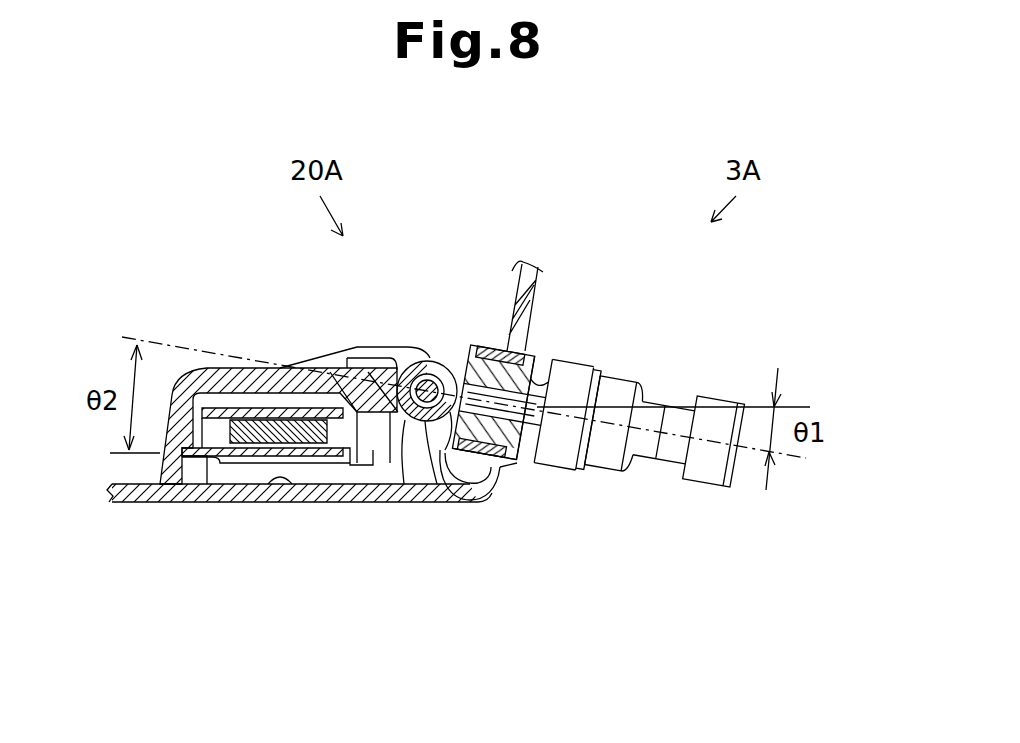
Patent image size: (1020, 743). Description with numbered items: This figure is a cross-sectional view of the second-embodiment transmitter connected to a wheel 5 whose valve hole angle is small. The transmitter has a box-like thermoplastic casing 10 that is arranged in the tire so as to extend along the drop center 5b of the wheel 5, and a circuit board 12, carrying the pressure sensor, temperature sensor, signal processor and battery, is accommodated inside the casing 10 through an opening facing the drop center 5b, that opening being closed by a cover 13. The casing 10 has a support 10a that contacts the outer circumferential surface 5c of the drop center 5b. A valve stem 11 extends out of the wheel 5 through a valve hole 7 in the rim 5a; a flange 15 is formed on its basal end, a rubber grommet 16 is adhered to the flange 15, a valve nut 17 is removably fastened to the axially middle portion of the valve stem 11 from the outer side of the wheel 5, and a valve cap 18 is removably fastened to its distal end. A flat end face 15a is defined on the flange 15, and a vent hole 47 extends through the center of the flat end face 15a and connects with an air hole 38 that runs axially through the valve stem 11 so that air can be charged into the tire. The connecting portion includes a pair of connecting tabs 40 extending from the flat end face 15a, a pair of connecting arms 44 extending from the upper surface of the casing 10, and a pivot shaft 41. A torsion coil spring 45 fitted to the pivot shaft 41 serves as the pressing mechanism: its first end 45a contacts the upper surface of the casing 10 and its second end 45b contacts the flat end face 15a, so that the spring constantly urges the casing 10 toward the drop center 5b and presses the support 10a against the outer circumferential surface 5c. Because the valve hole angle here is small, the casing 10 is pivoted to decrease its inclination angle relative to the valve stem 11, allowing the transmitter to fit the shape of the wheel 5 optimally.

The casing 10 is at (213, 366).
The support 10a is at (166, 503).
The circuit board 12 is at (216, 498).
The wheel 5 is at (530, 266).
The rim 5a is at (538, 330).
The drop center 5b is at (242, 497).
The outer circumferential surface 5c is at (290, 498).
The cover 13 is at (300, 497).
The torsion coil spring 45 is at (374, 496).
The first end 45a is at (345, 347).
The second end 45b is at (453, 314).
The connecting arms 44 is at (378, 347).
The pivot shaft 41 is at (414, 346).
The connecting tabs 40 is at (404, 486).
The vent hole 47 is at (436, 486).
The air hole 38 is at (517, 465).
The flange 15 is at (466, 340).
The flat end face 15a is at (493, 488).
The grommet 16 is at (497, 345).
The valve hole 7 is at (536, 352).
The valve stem 11 is at (574, 356).
The valve nut 17 is at (630, 382).
The valve cap 18 is at (706, 486).